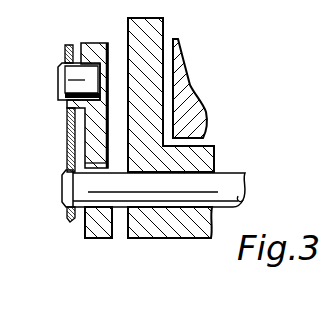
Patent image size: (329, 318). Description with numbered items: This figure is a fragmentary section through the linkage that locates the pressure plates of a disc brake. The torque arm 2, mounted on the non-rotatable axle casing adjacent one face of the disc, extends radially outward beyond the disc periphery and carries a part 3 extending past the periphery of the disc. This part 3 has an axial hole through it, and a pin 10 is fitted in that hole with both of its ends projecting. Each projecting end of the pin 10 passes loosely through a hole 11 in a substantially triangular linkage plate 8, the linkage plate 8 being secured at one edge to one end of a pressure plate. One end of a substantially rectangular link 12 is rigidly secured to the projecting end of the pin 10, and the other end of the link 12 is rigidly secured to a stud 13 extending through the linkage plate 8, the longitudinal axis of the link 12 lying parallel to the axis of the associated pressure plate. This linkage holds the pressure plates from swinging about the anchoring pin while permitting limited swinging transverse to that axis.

The torque arm 2 is at (128, 30).
The part 3 is at (143, 230).
The linkage plate 8 is at (90, 228).
The pin 10 is at (228, 181).
The hole 11 is at (83, 213).
The link 12 is at (70, 135).
The stud 13 is at (72, 78).